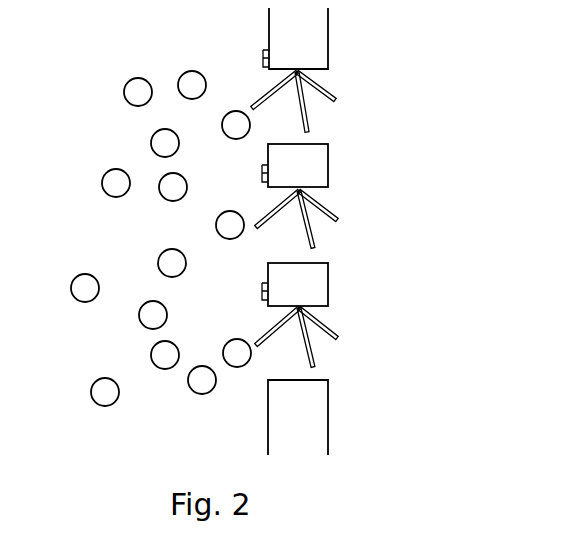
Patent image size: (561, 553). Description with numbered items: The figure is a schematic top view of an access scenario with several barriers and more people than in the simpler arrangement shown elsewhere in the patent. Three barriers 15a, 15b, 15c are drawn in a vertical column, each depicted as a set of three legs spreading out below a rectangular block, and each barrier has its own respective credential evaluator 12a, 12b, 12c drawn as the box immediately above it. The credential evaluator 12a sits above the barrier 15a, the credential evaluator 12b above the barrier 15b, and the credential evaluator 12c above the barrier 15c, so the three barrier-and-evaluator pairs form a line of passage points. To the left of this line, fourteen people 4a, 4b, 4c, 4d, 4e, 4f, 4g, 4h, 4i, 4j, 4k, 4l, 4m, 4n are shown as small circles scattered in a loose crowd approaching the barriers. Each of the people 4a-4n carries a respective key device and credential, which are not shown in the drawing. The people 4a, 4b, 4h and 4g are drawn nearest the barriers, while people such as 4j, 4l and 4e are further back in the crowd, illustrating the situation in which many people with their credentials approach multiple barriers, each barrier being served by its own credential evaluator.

The person 4a is at (235, 139).
The person 4b is at (203, 74).
The person 4c is at (151, 143).
The person 4d is at (150, 84).
The person 4e is at (102, 185).
The person 4f is at (163, 198).
The person 4g is at (216, 226).
The person 4h is at (227, 341).
The person 4i is at (158, 265).
The person 4j is at (71, 290).
The person 4k is at (139, 316).
The person 4l is at (91, 394).
The person 4m is at (151, 357).
The person 4n is at (188, 382).
The credential evaluator 12a is at (272, 62).
The credential evaluator 12b is at (271, 180).
The credential evaluator 12c is at (271, 298).
The barrier 15a is at (336, 99).
The barrier 15b is at (338, 219).
The barrier 15c is at (338, 337).